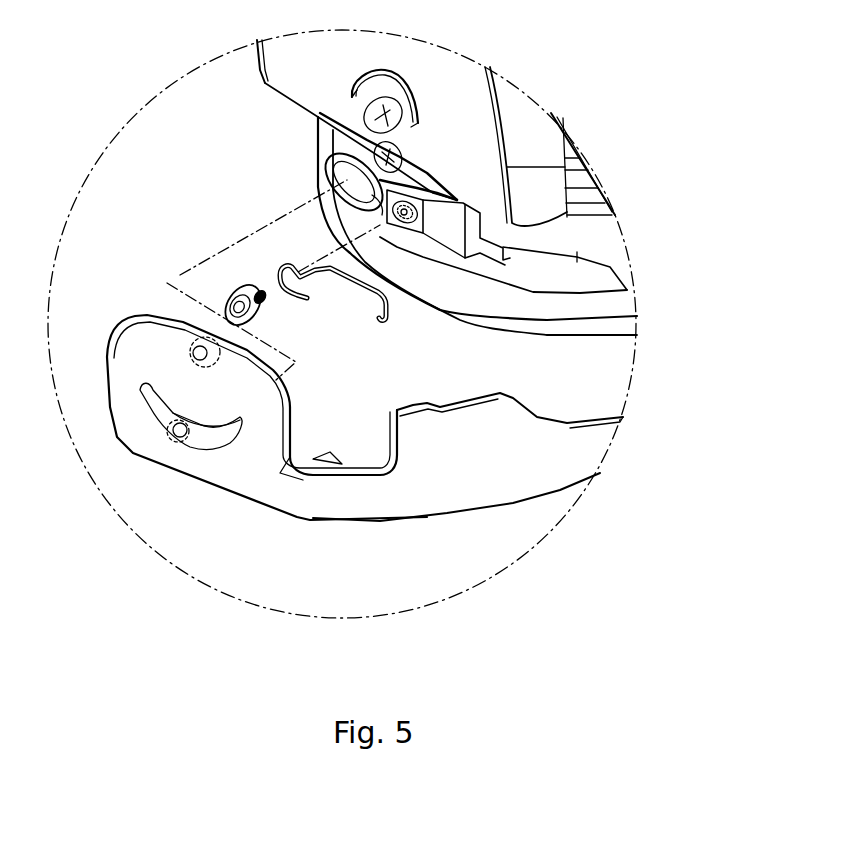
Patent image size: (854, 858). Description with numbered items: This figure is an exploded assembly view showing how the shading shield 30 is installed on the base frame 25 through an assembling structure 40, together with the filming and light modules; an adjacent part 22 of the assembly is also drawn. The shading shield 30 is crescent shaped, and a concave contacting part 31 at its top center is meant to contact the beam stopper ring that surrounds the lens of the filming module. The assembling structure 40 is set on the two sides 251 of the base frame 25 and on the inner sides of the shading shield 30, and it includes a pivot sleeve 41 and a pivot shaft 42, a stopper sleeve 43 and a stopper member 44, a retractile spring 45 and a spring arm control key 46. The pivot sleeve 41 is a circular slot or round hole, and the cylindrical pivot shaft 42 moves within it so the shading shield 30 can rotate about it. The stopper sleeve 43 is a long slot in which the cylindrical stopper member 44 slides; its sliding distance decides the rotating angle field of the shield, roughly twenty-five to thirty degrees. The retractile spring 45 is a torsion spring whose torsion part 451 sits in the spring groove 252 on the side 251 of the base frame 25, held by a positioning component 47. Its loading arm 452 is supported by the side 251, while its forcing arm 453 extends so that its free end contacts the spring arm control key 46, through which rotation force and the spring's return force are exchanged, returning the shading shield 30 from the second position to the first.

The disk 22 is at (397, 80).
The base frame 25 is at (607, 310).
The side of the base frame 251 is at (447, 222).
The spring groove 252 is at (410, 222).
The shading shield 30 is at (483, 487).
The concave contacting part 31 is at (605, 427).
The assembling structure 40 is at (227, 274).
The pivot sleeve 41 is at (372, 110).
The pivot shaft 42 is at (190, 350).
The stopper sleeve 43 is at (352, 190).
The stopper member 44 is at (175, 443).
The retractile spring 45 is at (386, 331).
The torsion part 451 is at (280, 263).
The loading arm 452 is at (299, 302).
The forcing arm 453 is at (362, 293).
The spring arm control key 46 is at (333, 453).
The positioning component 47 is at (222, 297).